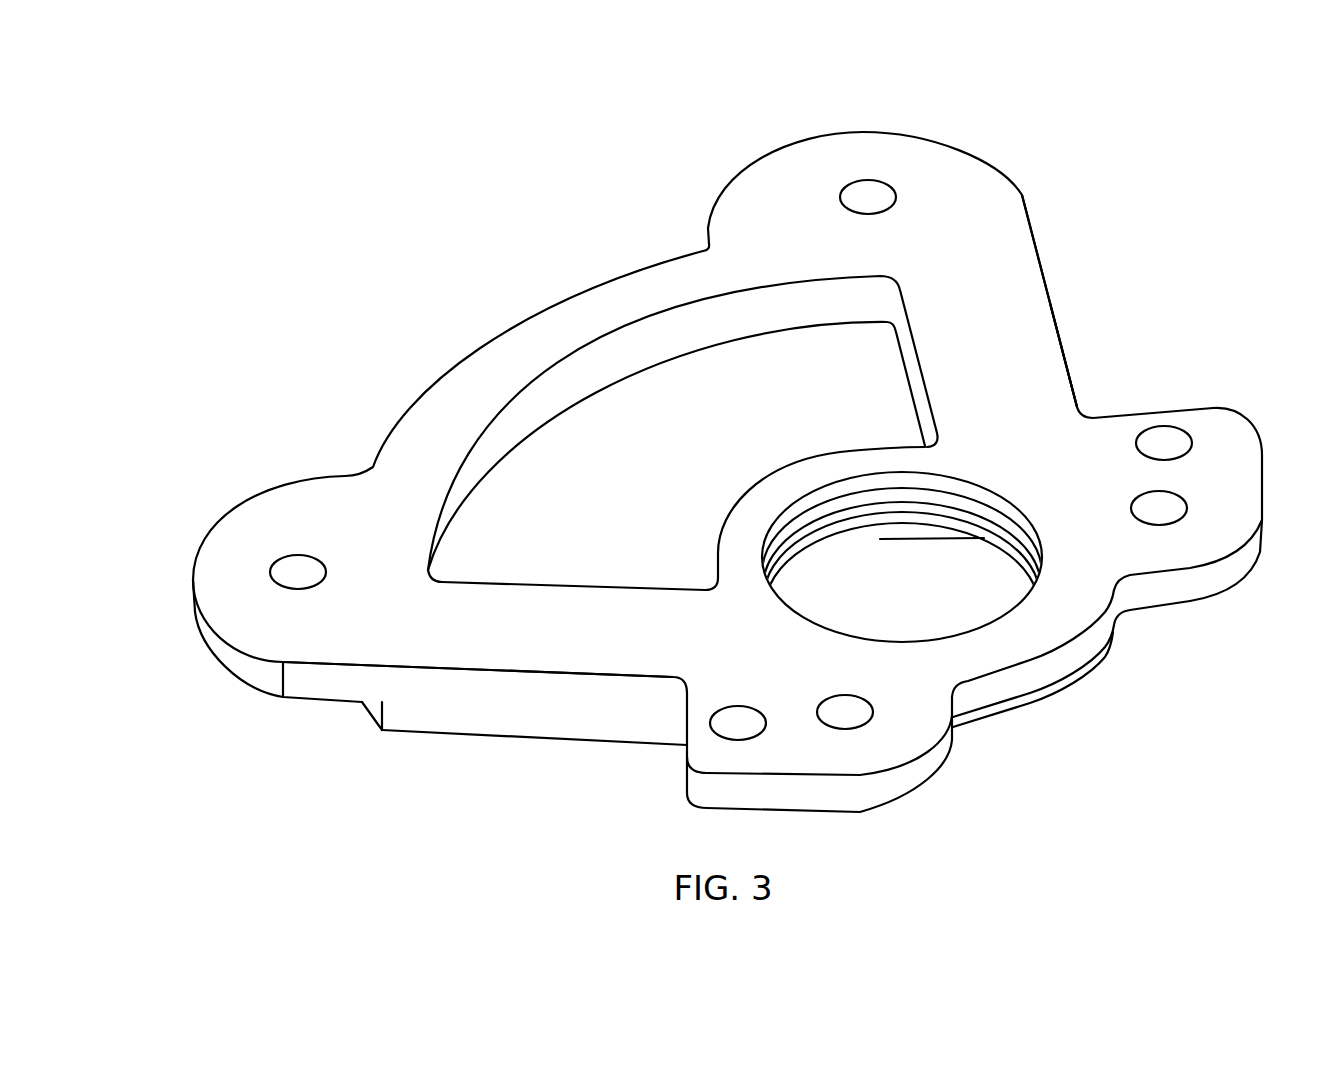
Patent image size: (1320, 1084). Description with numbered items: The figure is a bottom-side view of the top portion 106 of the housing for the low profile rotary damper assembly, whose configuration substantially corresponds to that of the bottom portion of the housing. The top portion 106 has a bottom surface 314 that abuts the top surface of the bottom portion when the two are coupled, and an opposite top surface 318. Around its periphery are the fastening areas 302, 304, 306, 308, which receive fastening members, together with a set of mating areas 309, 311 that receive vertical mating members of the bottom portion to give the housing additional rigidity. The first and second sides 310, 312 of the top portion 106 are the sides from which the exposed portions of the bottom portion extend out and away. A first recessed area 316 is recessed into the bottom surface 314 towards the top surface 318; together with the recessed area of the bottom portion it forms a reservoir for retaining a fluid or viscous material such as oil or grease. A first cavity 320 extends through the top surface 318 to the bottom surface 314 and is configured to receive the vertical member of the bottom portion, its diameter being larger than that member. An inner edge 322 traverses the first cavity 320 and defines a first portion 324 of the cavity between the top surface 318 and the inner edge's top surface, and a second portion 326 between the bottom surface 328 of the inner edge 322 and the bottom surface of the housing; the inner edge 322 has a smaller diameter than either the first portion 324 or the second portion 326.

The top portion 106 is at (422, 222).
The fastening area 302 is at (835, 703).
The fastening area 304 is at (1173, 507).
The fastening area 306 is at (893, 200).
The fastening area 308 is at (300, 570).
The mating area 309 is at (738, 715).
The first side 310 is at (457, 693).
The mating area 311 is at (1170, 440).
The second side 312 is at (1046, 262).
The bottom surface 314 is at (1040, 348).
The first recessed area 316 is at (791, 342).
The top surface 318 is at (622, 743).
The first cavity 320 is at (989, 596).
The inner edge 322 is at (797, 537).
The first portion 324 is at (878, 530).
The second portion 326 is at (1004, 518).
The bottom surface 328 is at (953, 515).